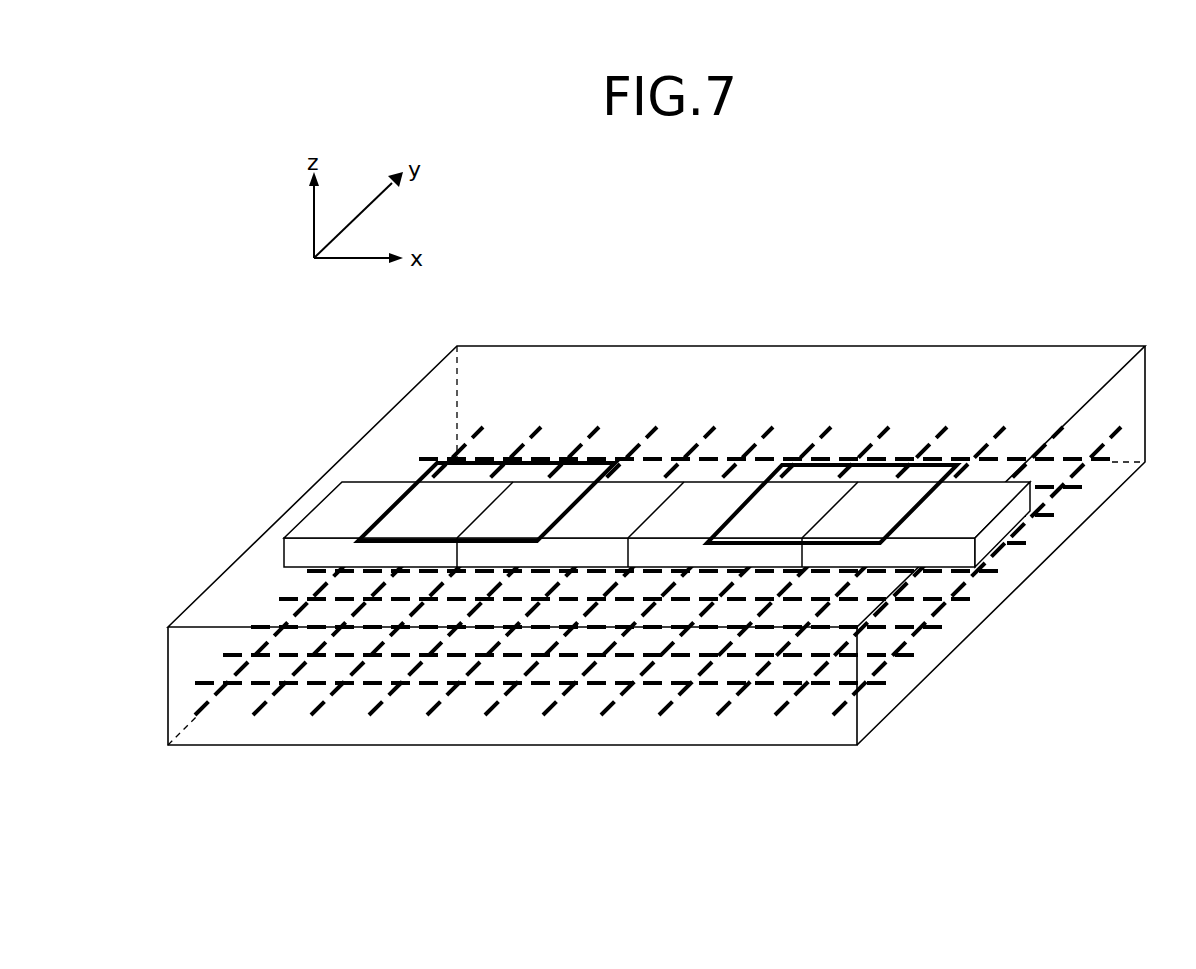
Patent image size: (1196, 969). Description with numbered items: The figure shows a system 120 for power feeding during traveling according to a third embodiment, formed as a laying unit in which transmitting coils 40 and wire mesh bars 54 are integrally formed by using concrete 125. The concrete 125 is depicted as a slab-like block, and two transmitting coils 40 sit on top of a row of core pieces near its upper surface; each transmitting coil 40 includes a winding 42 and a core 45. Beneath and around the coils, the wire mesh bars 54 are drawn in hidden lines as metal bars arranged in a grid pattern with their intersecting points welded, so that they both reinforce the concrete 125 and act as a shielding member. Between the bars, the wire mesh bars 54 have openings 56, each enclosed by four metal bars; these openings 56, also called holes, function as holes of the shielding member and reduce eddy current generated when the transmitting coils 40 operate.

The system for power feeding during traveling 120 is at (668, 500).
The concrete 125 is at (898, 360).
The wire mesh bars 54 is at (543, 430).
The openings 56 is at (652, 466).
The transmitting coil 40 is at (657, 403).
The winding 42 is at (753, 495).
The core 45 is at (802, 493).